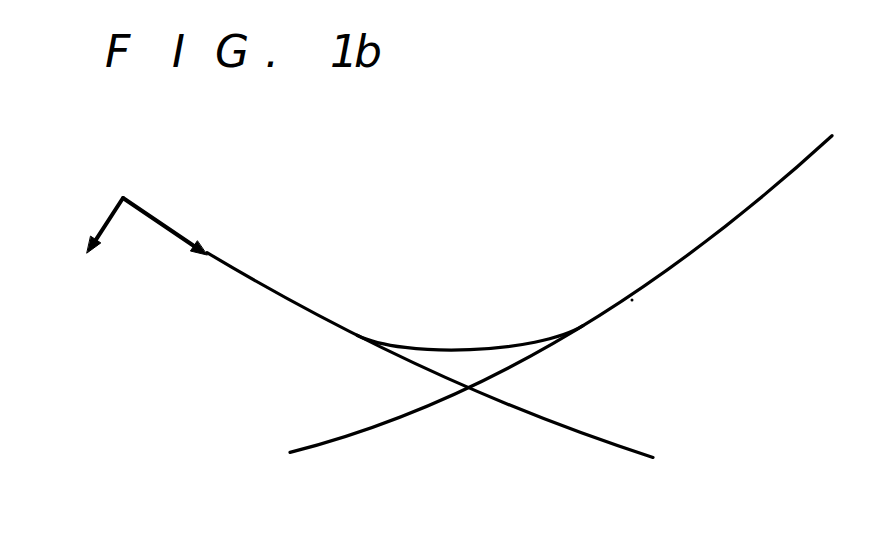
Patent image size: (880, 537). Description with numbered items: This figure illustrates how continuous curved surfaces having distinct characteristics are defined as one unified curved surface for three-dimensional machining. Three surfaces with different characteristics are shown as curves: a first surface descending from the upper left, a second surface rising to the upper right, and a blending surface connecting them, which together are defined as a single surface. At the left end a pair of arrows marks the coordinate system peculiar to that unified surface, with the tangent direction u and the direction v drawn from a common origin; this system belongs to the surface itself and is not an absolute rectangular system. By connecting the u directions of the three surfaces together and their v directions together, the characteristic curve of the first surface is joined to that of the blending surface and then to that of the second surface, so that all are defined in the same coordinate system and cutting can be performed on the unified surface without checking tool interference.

The u direction u is at (170, 226).
The v direction v is at (93, 225).